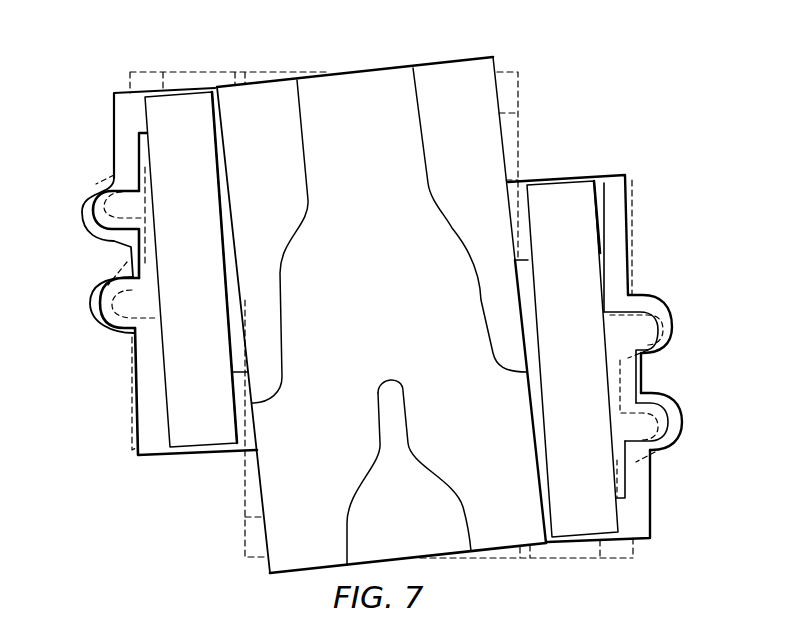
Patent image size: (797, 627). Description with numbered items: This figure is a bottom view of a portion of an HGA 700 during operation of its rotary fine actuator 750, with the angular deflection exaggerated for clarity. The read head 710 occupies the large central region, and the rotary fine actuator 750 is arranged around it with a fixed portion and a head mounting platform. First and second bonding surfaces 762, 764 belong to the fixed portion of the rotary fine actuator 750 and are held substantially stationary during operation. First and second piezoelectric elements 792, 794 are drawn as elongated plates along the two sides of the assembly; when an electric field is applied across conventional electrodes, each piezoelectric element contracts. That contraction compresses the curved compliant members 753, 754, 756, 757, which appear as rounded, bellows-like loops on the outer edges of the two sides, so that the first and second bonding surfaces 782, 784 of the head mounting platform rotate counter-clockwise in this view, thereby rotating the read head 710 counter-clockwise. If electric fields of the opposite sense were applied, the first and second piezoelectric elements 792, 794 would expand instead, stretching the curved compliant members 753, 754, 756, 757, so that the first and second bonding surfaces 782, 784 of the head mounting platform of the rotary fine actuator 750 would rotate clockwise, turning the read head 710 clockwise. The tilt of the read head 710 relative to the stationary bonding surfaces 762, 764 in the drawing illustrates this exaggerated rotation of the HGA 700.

The HGA 700 is at (381, 295).
The read head 710 is at (331, 92).
The rotary fine actuator 750 is at (633, 310).
The curved compliant member 753 is at (92, 213).
The curved compliant member 754 is at (100, 313).
The curved compliant member 756 is at (667, 323).
The curved compliant member 757 is at (680, 422).
The first bonding surface of fixed portion 762 is at (153, 422).
The second bonding surface of fixed portion 764 is at (615, 197).
The first bonding surface of head mounting platform 782 is at (124, 116).
The second bonding surface of head mounting platform 784 is at (635, 515).
The first piezoelectric element 792 is at (190, 331).
The second piezoelectric element 794 is at (575, 284).